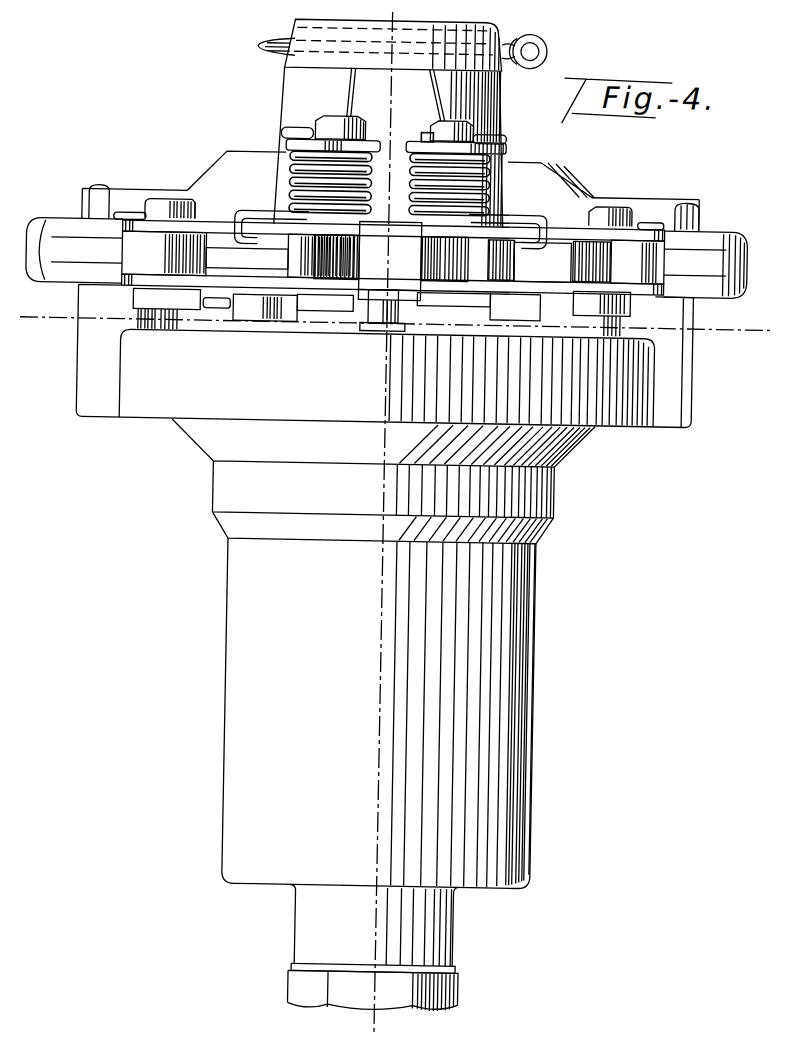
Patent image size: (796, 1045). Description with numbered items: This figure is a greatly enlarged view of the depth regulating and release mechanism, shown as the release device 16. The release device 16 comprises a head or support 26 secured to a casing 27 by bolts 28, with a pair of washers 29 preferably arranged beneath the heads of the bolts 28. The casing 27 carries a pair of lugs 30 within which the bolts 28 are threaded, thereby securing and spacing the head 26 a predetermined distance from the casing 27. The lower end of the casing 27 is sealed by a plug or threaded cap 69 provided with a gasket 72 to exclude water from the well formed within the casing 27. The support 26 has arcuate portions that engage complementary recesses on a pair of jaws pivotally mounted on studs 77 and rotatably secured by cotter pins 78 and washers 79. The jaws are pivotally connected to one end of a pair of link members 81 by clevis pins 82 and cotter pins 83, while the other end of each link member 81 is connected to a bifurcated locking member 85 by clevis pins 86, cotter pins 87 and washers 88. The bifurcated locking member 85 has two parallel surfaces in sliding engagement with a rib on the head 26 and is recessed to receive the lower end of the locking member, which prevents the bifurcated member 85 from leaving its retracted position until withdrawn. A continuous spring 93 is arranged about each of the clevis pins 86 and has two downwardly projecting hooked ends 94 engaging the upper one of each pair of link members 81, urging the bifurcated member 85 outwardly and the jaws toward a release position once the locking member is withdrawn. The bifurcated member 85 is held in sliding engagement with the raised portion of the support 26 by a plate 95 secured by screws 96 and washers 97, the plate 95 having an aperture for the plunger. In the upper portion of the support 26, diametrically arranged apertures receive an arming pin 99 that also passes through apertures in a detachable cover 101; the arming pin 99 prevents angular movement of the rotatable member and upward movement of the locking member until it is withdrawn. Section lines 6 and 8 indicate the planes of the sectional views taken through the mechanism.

The section line 6- 6 is at (36, 313).
The section line 8- 8 is at (396, 17).
The release device 16 is at (224, 605).
The head or support 26 is at (226, 154).
The casing 27 is at (590, 452).
The bolts 28 is at (100, 191).
The washers 29 is at (80, 224).
The lugs 30 is at (78, 386).
The plug or threaded cap 69 is at (470, 980).
The gasket 72 is at (302, 966).
The studs 77 is at (538, 280).
The cotter pins 78 is at (570, 290).
The washers 79 is at (500, 279).
The link members 81 is at (148, 237).
The clevis pins 82 is at (172, 204).
The cotter pins 83 is at (128, 217).
The bifurcated locking member 85 is at (429, 280).
The clevis pins 86 is at (340, 120).
The cotter pins 87 is at (306, 130).
The washers 88 is at (280, 136).
The continuous spring 93 is at (288, 172).
The hooked ends 94 is at (234, 222).
The plate 95 is at (393, 290).
The screws 96 is at (392, 331).
The washers 97 is at (372, 320).
The arming pin 99 is at (543, 45).
The detachable cover 101 is at (291, 22).